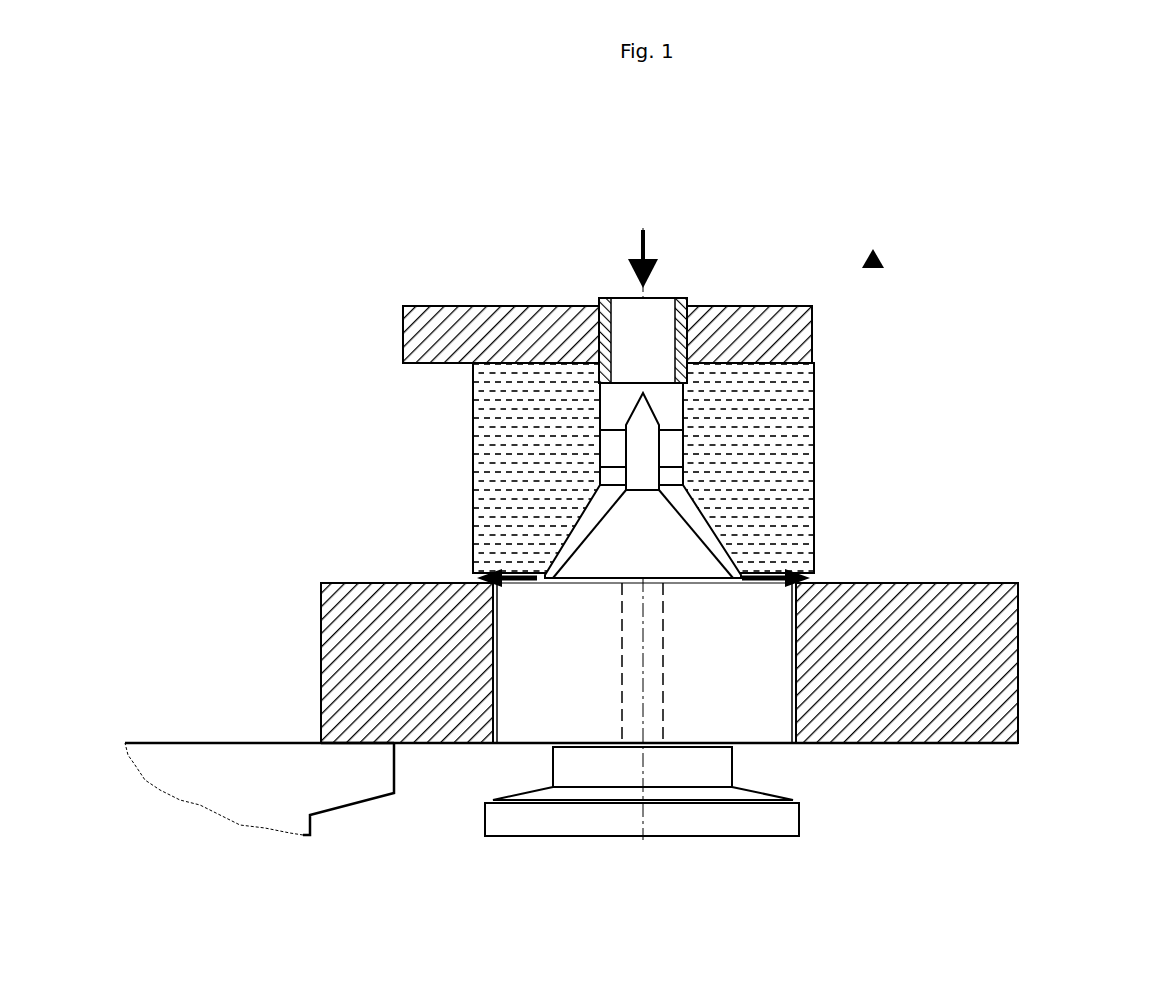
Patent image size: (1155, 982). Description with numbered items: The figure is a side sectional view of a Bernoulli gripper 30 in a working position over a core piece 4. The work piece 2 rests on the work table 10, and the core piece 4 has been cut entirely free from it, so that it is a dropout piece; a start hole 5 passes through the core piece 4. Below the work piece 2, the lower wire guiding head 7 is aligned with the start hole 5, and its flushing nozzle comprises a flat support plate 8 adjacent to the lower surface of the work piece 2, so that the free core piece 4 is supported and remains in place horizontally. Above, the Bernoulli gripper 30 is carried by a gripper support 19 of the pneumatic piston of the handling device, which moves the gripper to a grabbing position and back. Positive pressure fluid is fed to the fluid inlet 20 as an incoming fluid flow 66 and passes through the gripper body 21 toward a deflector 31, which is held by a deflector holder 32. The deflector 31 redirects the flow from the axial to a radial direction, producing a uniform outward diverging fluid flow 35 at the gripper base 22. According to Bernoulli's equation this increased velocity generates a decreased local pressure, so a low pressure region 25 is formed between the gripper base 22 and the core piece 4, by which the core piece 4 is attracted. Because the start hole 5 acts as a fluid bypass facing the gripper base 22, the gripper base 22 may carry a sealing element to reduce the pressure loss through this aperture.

The work piece 2 is at (335, 690).
The core piece 4 is at (337, 583).
The start hole 5 is at (628, 688).
The lower wire guiding head 7 is at (678, 810).
The support plate 8 is at (678, 753).
The work table 10 is at (294, 765).
The gripper support 19 is at (812, 322).
The fluid inlet 20 is at (592, 306).
The gripper body 21 is at (532, 495).
The gripper base 22 is at (527, 620).
The low pressure region 25 is at (763, 587).
The Bernoulli gripper 30 is at (885, 255).
The deflector 31 is at (615, 553).
The deflector holder 32 is at (611, 452).
The diverging fluid flow 35 is at (812, 578).
The incoming fluid flow 66 is at (643, 237).